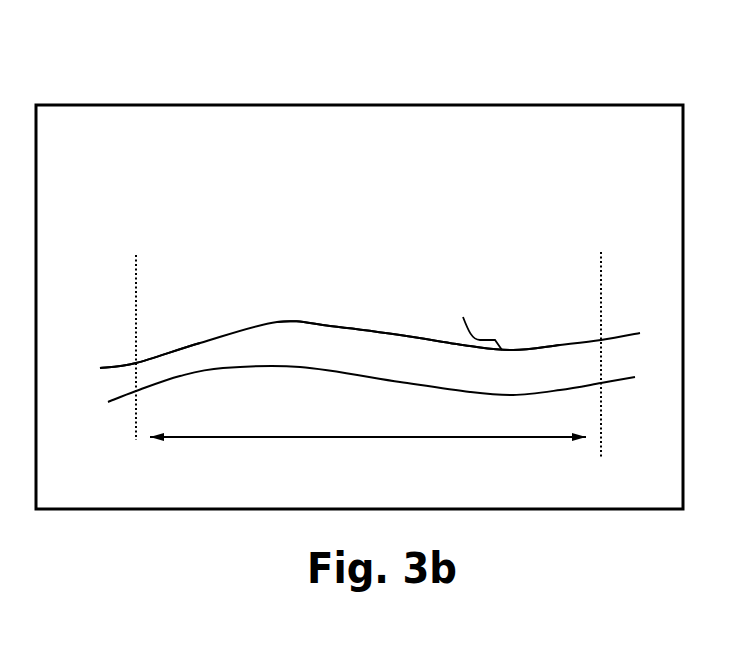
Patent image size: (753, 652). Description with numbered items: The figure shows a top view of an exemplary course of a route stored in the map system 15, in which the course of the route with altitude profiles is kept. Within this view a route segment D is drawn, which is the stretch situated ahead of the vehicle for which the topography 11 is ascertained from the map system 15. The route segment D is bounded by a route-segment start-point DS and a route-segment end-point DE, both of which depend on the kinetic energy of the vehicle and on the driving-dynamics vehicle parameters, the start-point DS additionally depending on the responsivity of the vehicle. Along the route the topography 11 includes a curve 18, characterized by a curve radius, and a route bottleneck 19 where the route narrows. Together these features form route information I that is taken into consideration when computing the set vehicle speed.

The map system 15 is at (360, 103).
The topography 11 is at (485, 263).
The route bottleneck 19 is at (155, 340).
The curve 18 is at (512, 337).
The route information I is at (393, 243).
The route segment D is at (368, 439).
The route-segment end-point DE is at (136, 443).
The route-segment start-point DS is at (601, 440).